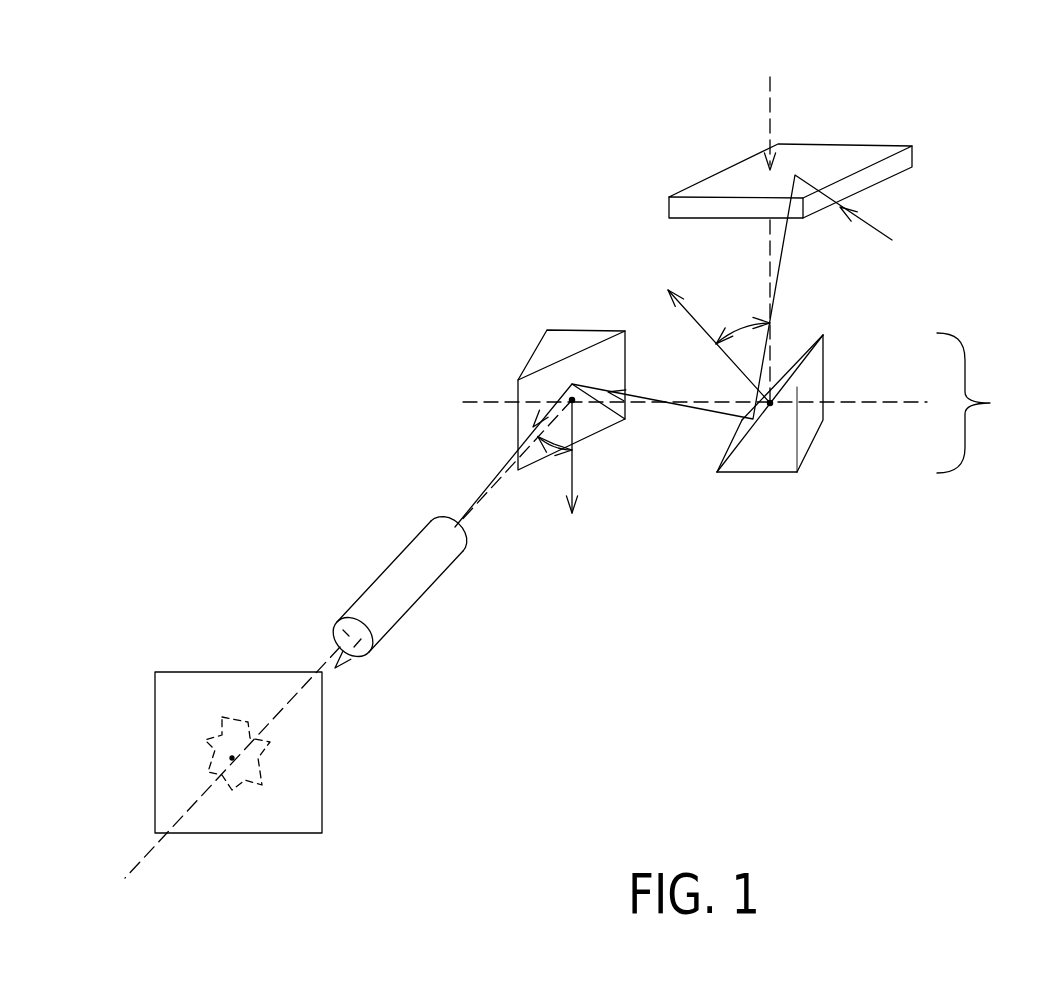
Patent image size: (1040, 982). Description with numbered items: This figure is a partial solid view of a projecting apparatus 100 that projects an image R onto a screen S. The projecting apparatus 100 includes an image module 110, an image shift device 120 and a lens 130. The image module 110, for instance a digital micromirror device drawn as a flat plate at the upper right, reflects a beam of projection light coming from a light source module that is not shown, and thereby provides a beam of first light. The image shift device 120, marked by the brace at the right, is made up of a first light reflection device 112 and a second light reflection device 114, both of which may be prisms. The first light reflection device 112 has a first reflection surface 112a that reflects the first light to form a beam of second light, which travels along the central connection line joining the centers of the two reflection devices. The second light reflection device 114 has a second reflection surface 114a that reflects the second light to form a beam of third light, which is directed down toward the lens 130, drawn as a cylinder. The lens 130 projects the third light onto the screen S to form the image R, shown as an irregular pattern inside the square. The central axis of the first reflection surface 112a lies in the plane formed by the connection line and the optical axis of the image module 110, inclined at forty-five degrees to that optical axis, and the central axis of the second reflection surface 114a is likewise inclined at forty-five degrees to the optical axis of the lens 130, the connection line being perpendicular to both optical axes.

The projecting apparatus 100 is at (765, 703).
The image module 110 is at (845, 145).
The first light reflection device 112 is at (817, 379).
The first reflection surface 112a is at (797, 360).
The second light reflection device 114 is at (513, 379).
The second reflection surface 114a is at (531, 390).
The image shift device 120 is at (988, 403).
The lens 130 is at (382, 570).
The screen S is at (237, 672).
The image R is at (222, 747).